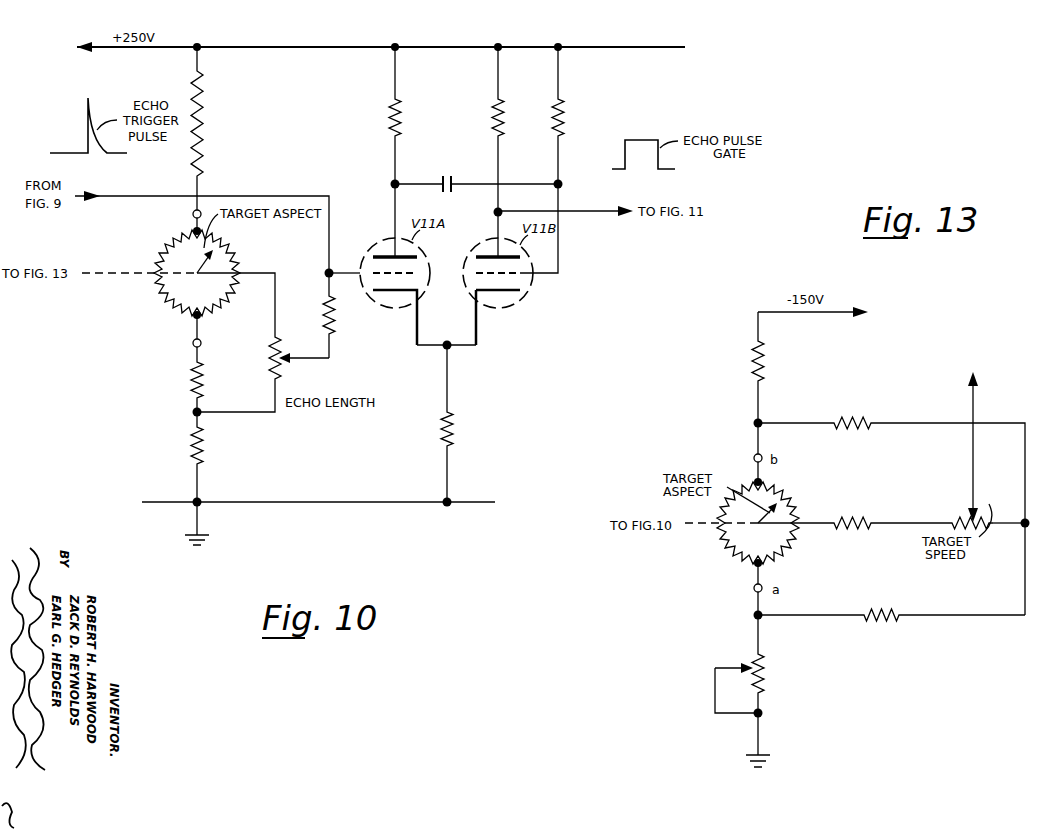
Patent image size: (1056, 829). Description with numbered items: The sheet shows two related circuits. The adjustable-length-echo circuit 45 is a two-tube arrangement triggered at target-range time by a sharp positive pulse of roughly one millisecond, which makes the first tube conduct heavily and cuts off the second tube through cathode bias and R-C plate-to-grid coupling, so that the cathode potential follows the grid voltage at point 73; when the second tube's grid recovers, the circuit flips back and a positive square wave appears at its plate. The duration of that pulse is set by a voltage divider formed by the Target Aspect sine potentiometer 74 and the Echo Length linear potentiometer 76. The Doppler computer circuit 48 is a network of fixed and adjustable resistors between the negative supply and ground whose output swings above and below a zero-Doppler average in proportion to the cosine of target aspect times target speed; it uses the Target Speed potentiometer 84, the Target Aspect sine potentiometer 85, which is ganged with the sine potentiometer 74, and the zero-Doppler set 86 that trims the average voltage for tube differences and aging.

In FIG. 10, the grid voltage point 73 is at (327, 270).
In FIG. 10, the sine potentiometer 74 is at (182, 308).
In FIG. 10, the linear potentiometer 76 is at (288, 367).
In FIG. 10, the adjustable-length-echo circuit 45 is at (423, 513).
In FIG. 13, the sine potentiometer 85 is at (782, 500).
In FIG. 13, the Target Speed potentiometer 84 is at (967, 512).
In FIG. 13, the zero-Doppler set 86 is at (770, 660).
In FIG. 13, the Doppler computer circuit 48 is at (975, 632).